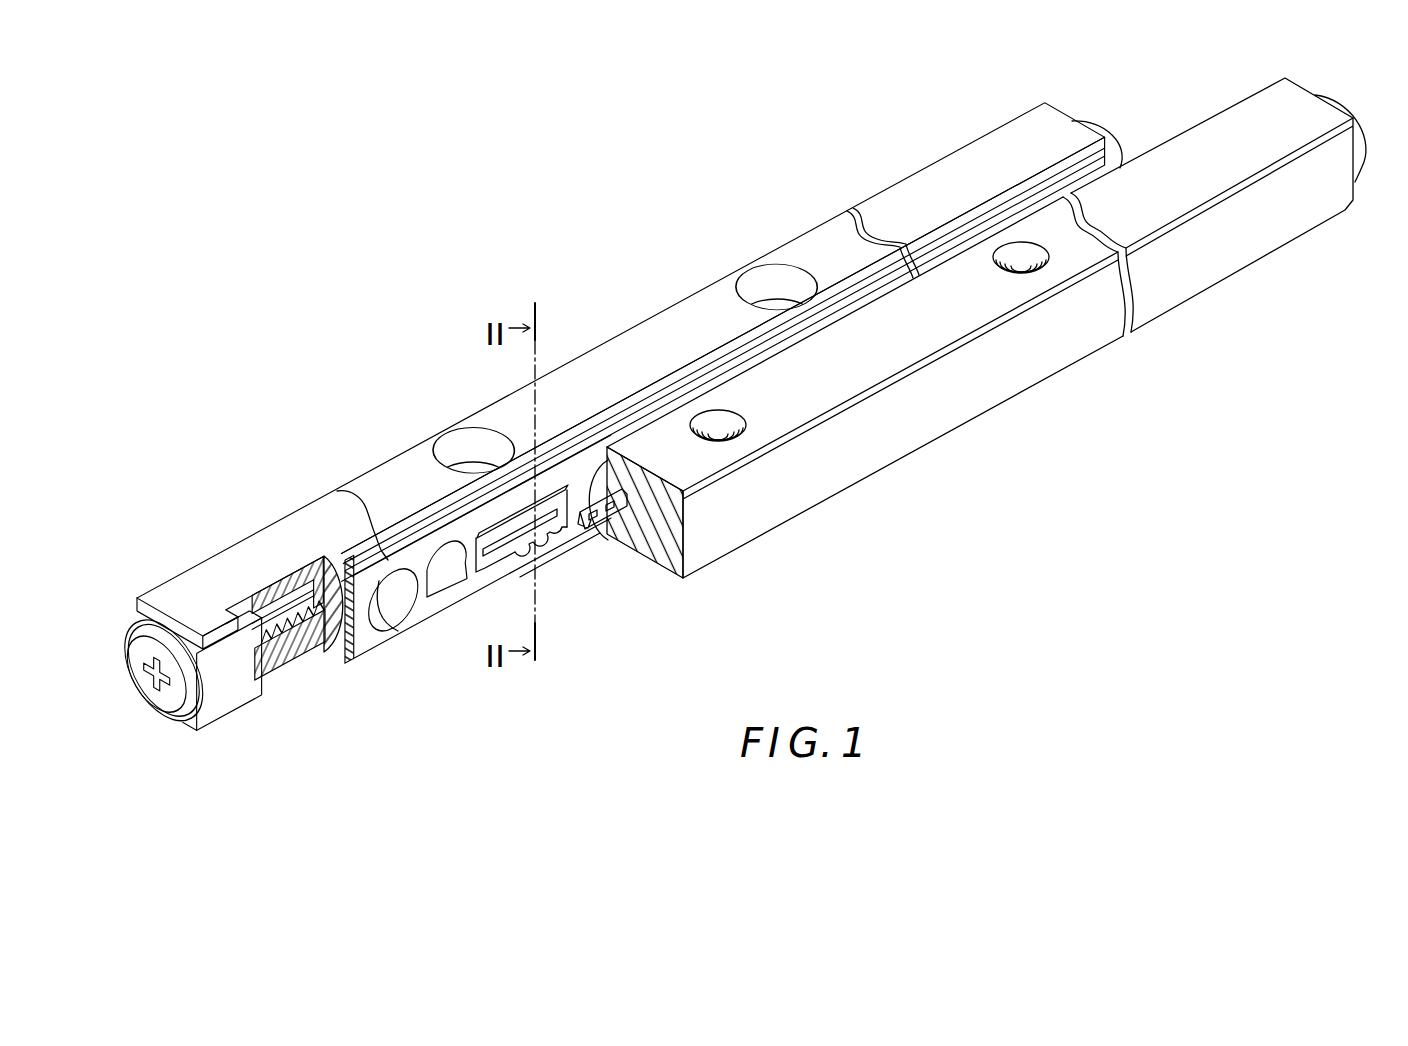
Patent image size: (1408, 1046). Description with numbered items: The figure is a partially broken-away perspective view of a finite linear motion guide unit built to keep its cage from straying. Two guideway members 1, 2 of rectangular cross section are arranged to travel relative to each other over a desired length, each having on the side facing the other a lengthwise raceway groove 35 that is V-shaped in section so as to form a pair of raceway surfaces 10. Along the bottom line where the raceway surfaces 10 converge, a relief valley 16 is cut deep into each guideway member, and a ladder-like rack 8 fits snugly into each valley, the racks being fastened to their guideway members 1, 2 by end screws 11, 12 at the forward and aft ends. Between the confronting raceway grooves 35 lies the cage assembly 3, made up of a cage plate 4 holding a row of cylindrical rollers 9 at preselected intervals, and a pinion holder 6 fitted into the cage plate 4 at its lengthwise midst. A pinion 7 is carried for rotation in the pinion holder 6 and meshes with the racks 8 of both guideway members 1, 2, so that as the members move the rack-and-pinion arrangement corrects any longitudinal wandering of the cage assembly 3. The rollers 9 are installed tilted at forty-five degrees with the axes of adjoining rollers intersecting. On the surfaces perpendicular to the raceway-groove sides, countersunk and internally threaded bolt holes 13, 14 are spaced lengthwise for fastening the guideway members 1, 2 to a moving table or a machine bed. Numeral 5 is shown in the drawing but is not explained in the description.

The guideway member 1 is at (830, 247).
The guideway member 2 is at (1067, 343).
The cage assembly 3 is at (427, 607).
The cage plate 4 is at (463, 537).
The guide groove 5 is at (566, 554).
The pinion holder 6 is at (553, 493).
The pinion 7 is at (542, 545).
The rack 8 is at (285, 605).
The roller 9 is at (400, 607).
The raceway surface 10 is at (340, 660).
The end screw 11 is at (160, 660).
The end screw 12 is at (1360, 190).
The bolt hole 13 is at (757, 282).
The bolt hole 14 is at (1023, 274).
The relief valley 16 is at (317, 600).
The raceway groove 35 is at (338, 585).